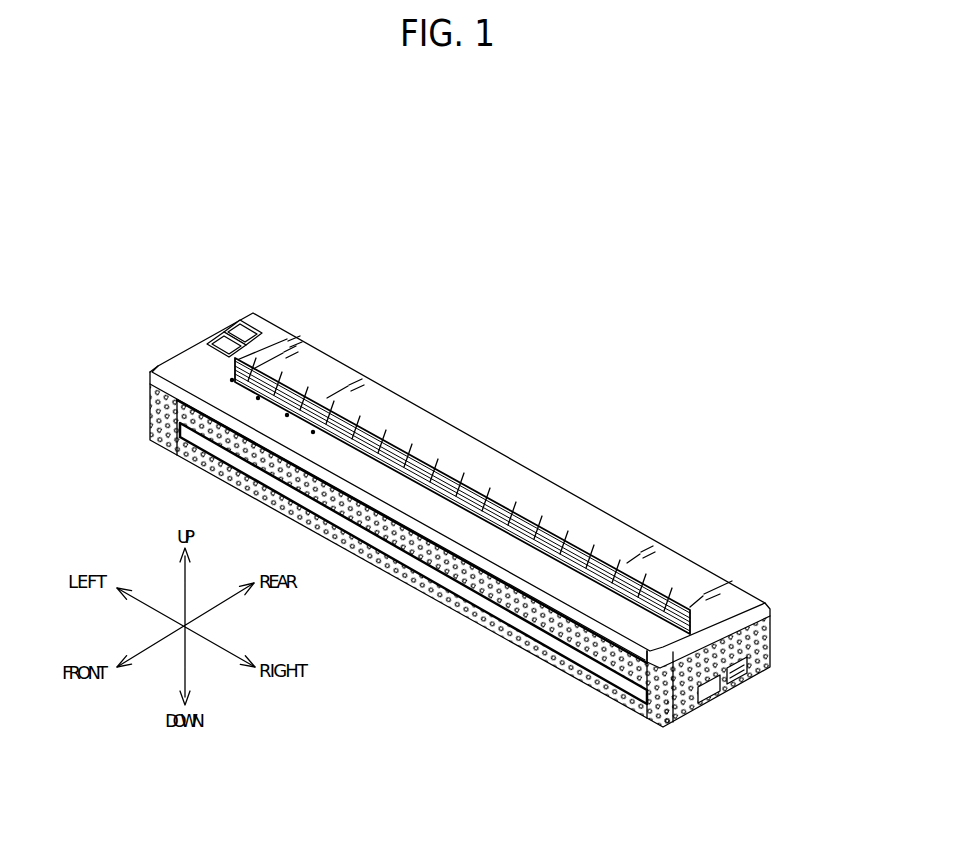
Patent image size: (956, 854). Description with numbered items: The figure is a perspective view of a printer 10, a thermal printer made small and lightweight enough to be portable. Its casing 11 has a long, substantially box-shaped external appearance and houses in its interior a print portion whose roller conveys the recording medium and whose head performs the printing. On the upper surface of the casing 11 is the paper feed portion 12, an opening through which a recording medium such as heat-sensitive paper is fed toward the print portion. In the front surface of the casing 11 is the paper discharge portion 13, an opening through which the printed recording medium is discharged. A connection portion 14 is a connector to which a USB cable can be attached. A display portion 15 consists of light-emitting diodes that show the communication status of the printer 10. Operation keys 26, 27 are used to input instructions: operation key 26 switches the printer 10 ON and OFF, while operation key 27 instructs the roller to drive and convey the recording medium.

The printer 10 is at (585, 384).
The casing 11 is at (437, 413).
The paper feed portion 12 is at (497, 500).
The paper discharge portion 13 is at (447, 577).
The connection portion 14 is at (745, 679).
The display portion 15 is at (283, 421).
The operation key 26 is at (250, 332).
The operation key 27 is at (222, 348).